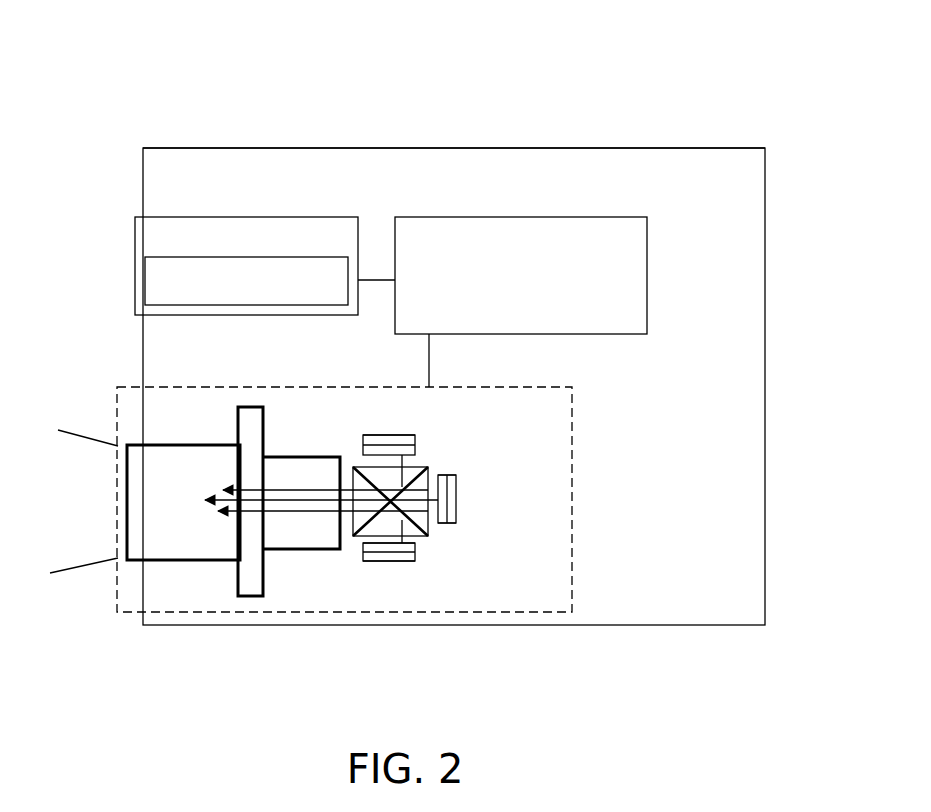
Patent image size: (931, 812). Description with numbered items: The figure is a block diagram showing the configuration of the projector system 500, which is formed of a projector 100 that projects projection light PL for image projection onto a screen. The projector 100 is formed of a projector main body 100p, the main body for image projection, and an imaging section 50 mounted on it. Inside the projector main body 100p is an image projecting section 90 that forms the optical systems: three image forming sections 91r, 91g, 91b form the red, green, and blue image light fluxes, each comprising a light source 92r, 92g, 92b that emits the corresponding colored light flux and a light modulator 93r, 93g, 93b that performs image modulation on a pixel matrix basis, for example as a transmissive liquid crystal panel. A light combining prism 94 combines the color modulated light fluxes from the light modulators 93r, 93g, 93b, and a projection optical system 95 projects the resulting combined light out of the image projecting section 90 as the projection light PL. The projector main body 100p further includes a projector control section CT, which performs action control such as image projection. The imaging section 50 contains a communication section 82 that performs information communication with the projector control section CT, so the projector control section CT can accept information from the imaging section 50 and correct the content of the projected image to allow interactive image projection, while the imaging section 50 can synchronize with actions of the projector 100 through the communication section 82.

The projector system 500 is at (572, 88).
The projector 100 is at (490, 128).
The projector main body 100p is at (388, 160).
The imaging section 50 is at (253, 218).
The communication section 82 is at (263, 306).
The projector control section CT is at (500, 232).
The image projecting section 90 is at (368, 612).
The projection optical system 95 is at (207, 450).
The projection light PL is at (97, 557).
The light combining prism 94 is at (428, 482).
The light modulator 93b is at (415, 453).
The light source 92b is at (387, 436).
The image forming section 91b is at (358, 433).
The light source 92r is at (383, 562).
The light modulator 93r is at (350, 562).
The image forming section 91r is at (420, 577).
The light source 92g is at (457, 510).
The light modulator 93g is at (447, 523).
The image forming section 91g is at (467, 487).